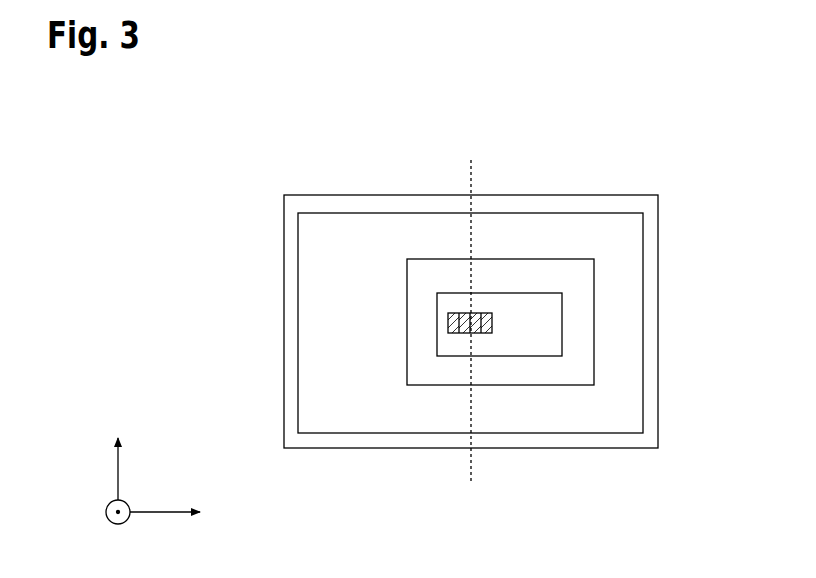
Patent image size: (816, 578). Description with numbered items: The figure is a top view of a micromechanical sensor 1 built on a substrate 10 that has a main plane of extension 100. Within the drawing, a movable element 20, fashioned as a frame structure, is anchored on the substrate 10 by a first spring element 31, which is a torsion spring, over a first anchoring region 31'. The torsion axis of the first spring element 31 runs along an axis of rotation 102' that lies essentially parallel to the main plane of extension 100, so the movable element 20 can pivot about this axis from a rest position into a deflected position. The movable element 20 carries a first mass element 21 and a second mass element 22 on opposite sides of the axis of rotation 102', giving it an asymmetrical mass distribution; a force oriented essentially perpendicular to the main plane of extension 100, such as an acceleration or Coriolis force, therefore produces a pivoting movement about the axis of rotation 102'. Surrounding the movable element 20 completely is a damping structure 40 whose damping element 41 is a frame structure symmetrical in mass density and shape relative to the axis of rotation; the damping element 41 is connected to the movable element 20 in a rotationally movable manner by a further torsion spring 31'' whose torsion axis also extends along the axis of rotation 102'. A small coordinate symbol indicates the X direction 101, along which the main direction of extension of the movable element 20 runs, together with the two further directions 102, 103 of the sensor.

The micromechanical sensor 1 is at (226, 161).
The substrate 10 is at (237, 302).
The movable element 20 is at (571, 256).
The first mass element 21 is at (594, 322).
The second mass element 22 is at (417, 365).
The first spring element 31 is at (494, 323).
The first anchoring region 31' is at (448, 324).
The further torsion spring 31'' is at (515, 321).
The damping structure 40 is at (622, 193).
The damping element 41 is at (652, 270).
The main plane of extension 100 is at (188, 482).
The X direction 101 is at (166, 533).
The second direction 102 is at (95, 463).
The axis of rotation 102' is at (431, 297).
The third direction 103 is at (106, 513).